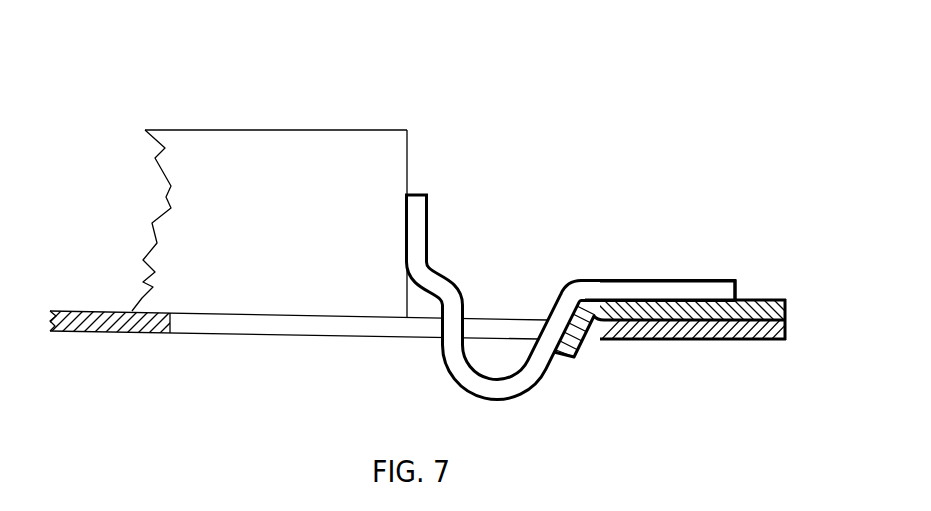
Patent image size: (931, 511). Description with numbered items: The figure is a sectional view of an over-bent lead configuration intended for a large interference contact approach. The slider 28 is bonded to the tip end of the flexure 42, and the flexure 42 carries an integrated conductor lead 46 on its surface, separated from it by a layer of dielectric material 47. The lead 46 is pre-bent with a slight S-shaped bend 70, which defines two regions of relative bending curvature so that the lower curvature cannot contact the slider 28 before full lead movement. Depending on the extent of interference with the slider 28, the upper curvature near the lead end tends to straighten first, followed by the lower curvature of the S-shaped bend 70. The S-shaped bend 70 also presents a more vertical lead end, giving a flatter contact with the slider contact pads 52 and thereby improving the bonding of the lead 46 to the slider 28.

The slider 28 is at (265, 228).
The slider contact pads 52 is at (407, 195).
The S-shaped bend 70 is at (442, 270).
The lead 46 is at (703, 288).
The layer of dielectric material 47 is at (787, 319).
The flexure 42 is at (740, 343).